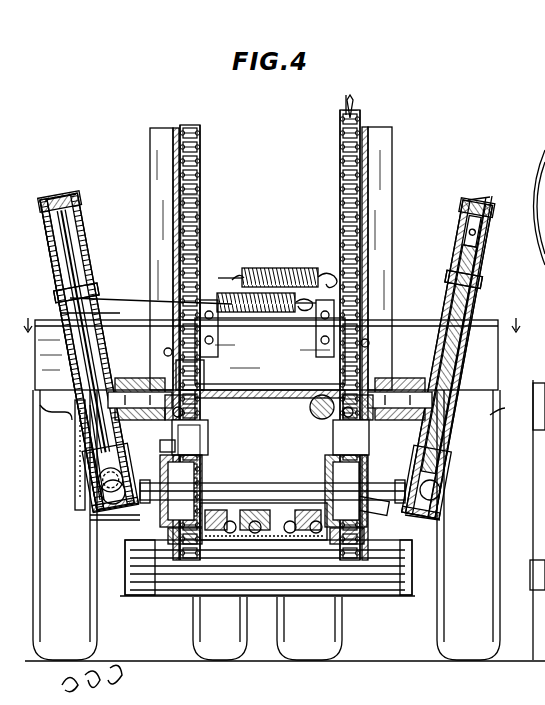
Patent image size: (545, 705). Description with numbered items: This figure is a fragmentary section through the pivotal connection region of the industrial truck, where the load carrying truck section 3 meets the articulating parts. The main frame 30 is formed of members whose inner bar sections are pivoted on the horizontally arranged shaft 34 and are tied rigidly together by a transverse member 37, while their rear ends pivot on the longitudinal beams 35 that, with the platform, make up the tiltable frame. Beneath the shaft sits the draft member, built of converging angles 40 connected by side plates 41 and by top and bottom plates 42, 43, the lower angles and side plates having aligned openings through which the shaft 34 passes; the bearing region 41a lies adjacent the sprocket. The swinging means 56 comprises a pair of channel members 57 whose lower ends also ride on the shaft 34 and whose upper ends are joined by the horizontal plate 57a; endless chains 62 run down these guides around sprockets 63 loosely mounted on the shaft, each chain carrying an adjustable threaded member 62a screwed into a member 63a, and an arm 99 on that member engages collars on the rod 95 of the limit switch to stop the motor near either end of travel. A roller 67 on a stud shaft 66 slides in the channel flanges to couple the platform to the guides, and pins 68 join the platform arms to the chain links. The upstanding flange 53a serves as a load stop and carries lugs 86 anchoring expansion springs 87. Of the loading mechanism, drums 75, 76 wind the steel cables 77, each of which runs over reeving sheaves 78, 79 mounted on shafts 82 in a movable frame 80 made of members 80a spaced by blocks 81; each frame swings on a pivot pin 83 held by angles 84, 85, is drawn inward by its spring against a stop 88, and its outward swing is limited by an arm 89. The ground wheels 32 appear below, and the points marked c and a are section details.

The truck section 3 is at (272, 335).
The main frame 30 is at (140, 580).
The wheels 32 is at (85, 648).
The horizontally arranged shaft 34 is at (275, 490).
The longitudinal beam 35 is at (136, 378).
The transverse member 37 is at (175, 596).
The converging angle 40 is at (265, 527).
The side plate 41 is at (325, 450).
The bearing block 41a is at (205, 462).
The top plate 42 is at (280, 390).
The bottom plate 43 is at (265, 540).
The up-standing portion of the angle 53a is at (270, 351).
The means for swinging the platform member 56 is at (206, 225).
The channel member 57 is at (160, 158).
The horizontal plate 57a is at (130, 356).
The endless chain 62 is at (199, 180).
The threaded member 62a is at (160, 326).
The sprocket 63 is at (185, 545).
The member 63a is at (198, 370).
The stud shaft 66 is at (205, 432).
The roller 67 is at (195, 400).
The pin 68 is at (310, 408).
The drum 75 is at (75, 472).
The drum 76 is at (445, 488).
The steel cable 77 is at (85, 338).
The reeving element 78 is at (85, 440).
The reeving element 79 is at (55, 240).
The movable frame 80 is at (77, 192).
The frame member 80a is at (80, 245).
The block 81 is at (56, 198).
The shaft 82 is at (62, 290).
The pivot pin 83 is at (100, 492).
The angle 84 is at (100, 516).
The angle 85 is at (440, 530).
The lug 86 is at (205, 300).
The expansion spring 87 is at (272, 270).
The stop 88 is at (72, 370).
The arm 89 is at (72, 420).
The rod 95 is at (352, 101).
The arm 99 is at (333, 357).
The pivot point c is at (293, 348).
The detail a is at (536, 405).